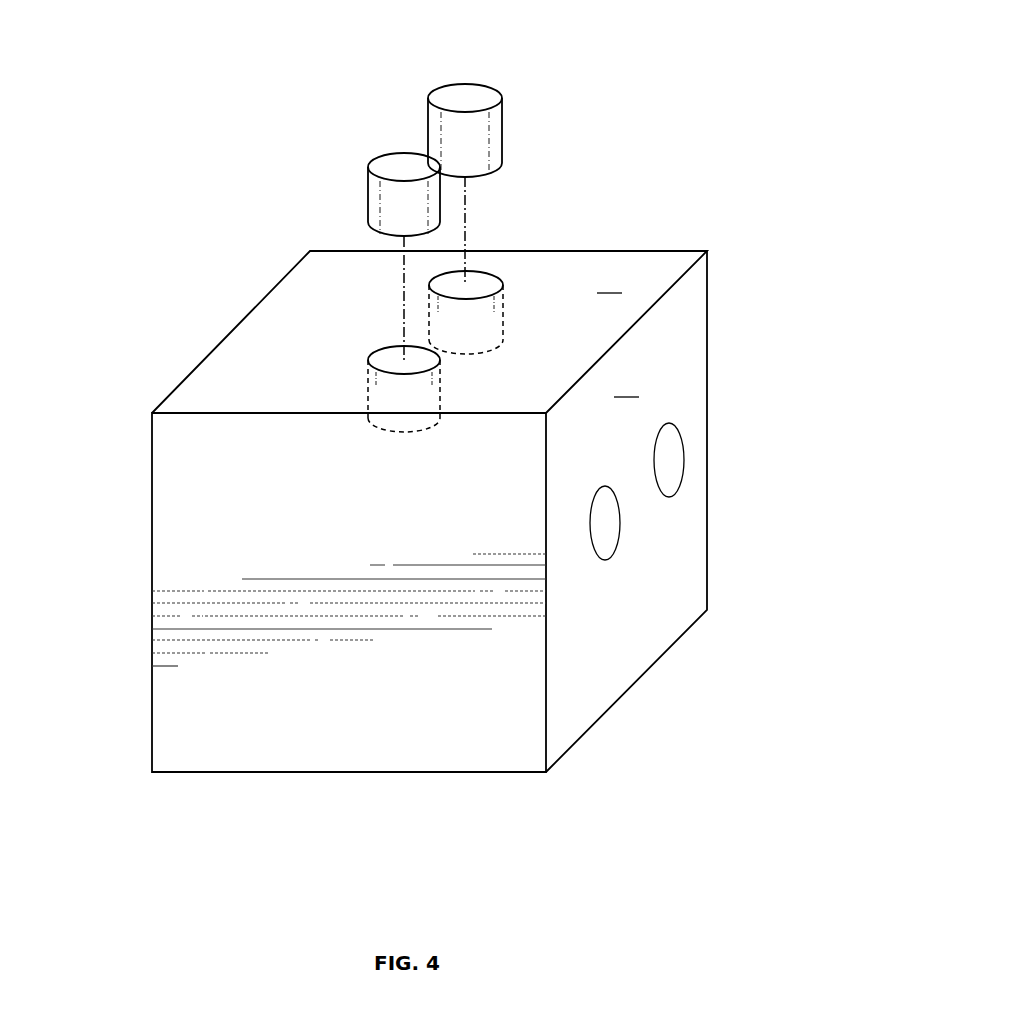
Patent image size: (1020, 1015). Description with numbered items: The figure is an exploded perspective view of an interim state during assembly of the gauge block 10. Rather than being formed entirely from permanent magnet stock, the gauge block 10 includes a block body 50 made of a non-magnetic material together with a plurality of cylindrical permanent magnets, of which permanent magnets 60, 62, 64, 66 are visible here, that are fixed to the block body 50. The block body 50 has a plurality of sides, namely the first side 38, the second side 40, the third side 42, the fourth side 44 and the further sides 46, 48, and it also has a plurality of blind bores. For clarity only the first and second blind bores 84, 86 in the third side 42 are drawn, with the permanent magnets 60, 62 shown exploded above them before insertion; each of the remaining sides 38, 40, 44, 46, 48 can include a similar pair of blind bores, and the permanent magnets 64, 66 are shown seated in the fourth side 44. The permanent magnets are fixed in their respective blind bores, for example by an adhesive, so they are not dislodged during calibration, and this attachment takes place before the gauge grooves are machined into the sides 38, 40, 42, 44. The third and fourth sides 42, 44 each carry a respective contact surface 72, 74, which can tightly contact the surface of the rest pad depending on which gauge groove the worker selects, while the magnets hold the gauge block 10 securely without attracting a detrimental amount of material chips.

The gauge block 10 is at (462, 441).
The first side 38 is at (417, 772).
The second side 40 is at (150, 597).
The third side 42 is at (497, 250).
The fourth side 44 is at (695, 527).
The side 46 is at (267, 758).
The side 48 is at (653, 250).
The block body 50 is at (226, 325).
The permanent magnet 60 is at (398, 165).
The permanent magnet 62 is at (462, 95).
The permanent magnet 64 is at (605, 523).
The permanent magnet 66 is at (676, 457).
The contact surface 72 is at (609, 283).
The contact surface 74 is at (626, 387).
The first blind bore 84 is at (400, 433).
The second blind bore 86 is at (503, 312).